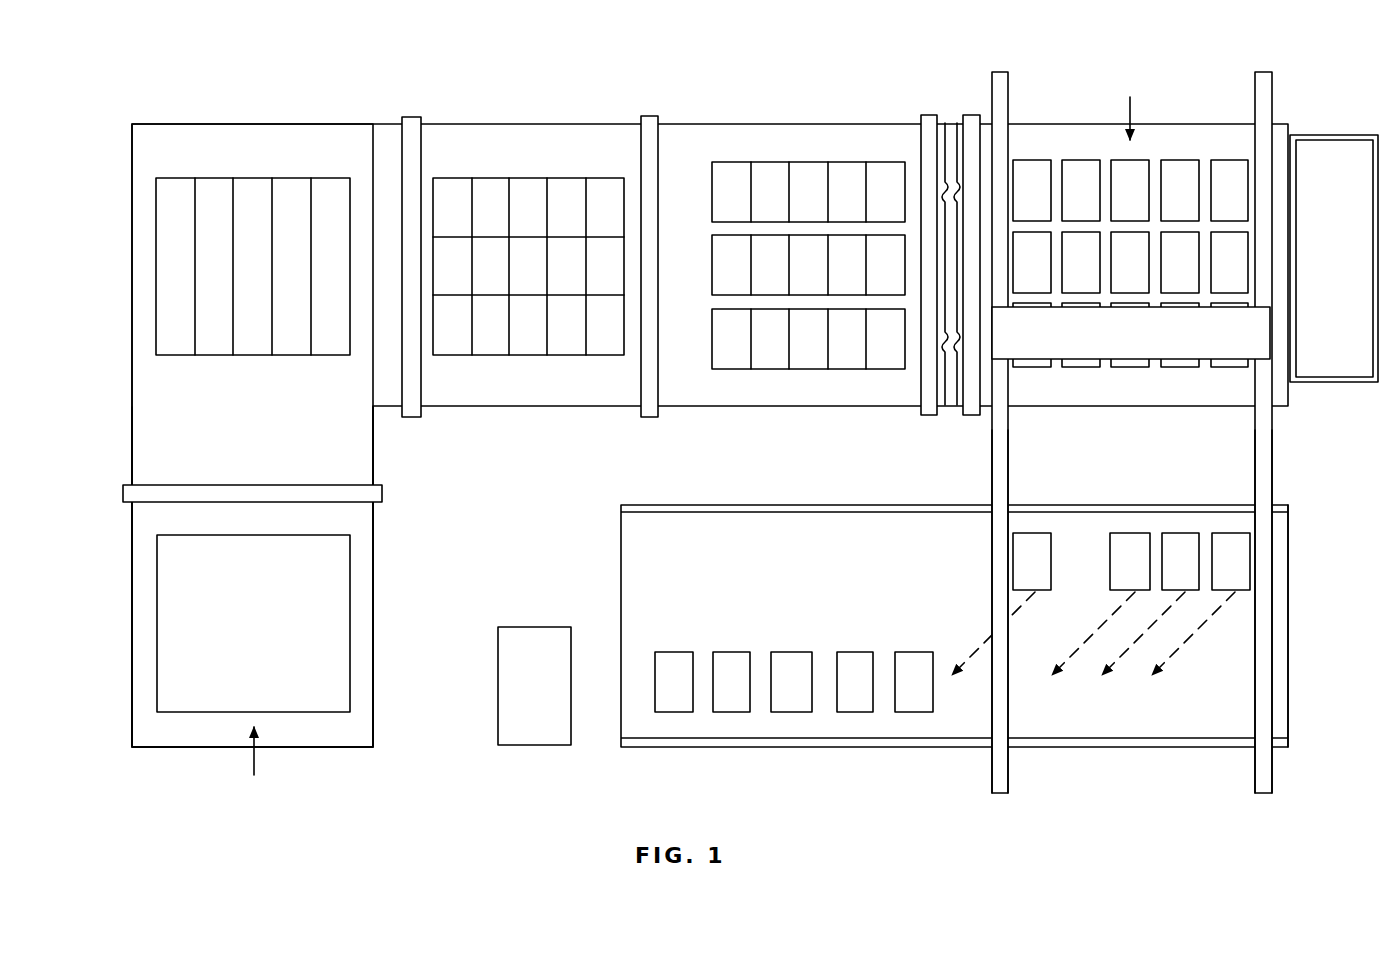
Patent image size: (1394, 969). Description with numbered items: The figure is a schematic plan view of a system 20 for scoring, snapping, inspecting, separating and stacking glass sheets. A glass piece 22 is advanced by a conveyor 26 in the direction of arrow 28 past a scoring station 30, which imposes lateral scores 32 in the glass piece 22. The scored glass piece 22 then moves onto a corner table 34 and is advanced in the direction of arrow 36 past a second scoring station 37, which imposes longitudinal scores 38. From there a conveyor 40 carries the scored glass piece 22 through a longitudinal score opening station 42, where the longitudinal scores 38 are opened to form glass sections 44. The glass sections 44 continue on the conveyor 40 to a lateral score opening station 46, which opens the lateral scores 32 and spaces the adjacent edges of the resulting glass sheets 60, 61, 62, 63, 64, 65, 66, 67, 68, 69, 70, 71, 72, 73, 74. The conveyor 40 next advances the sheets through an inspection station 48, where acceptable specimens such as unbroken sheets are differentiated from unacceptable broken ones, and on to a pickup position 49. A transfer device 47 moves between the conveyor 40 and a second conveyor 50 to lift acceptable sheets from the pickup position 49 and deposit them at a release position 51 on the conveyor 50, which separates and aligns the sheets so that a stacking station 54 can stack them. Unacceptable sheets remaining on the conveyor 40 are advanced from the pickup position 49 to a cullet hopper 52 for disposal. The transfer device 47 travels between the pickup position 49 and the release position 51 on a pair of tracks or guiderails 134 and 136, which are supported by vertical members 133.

The system 20 is at (605, 60).
The glass piece 22 is at (150, 688).
The conveyor 26 is at (125, 621).
The arrow 28 is at (254, 762).
The scoring station 30 is at (403, 494).
The lateral scores 32 is at (272, 195).
The corner table 34 is at (125, 138).
The arrow 36 is at (150, 267).
The second scoring station 37 is at (418, 106).
The longitudinal scores 38 is at (603, 295).
The conveyor 40 is at (1105, 110).
The longitudinal score opening station 42 is at (651, 108).
The glass sections 44 is at (855, 156).
The lateral score opening station 46 is at (927, 113).
The transfer device 47 is at (1146, 348).
The inspection station 48 is at (971, 111).
The pickup position 49 is at (1180, 106).
The conveyor 50 is at (1096, 759).
The release position 51 is at (1302, 551).
The cullet hopper 52 is at (1330, 136).
The stacking station 54 is at (535, 745).
The glass sheet 60 is at (1230, 368).
The glass sheet 61 is at (1180, 368).
The glass sheet 62 is at (1130, 368).
The glass sheet 63 is at (1081, 368).
The glass sheet 64 is at (1032, 368).
The glass sheet 65 is at (1242, 276).
The glass sheet 66 is at (1192, 276).
The glass sheet 67 is at (1142, 276).
The glass sheet 68 is at (1093, 276).
The glass sheet 69 is at (1044, 276).
The glass sheet 70 is at (1242, 204).
The glass sheet 71 is at (1192, 204).
The glass sheet 72 is at (1142, 204).
The glass sheet 73 is at (1093, 204).
The glass sheet 74 is at (1044, 204).
The vertical members 133 is at (1004, 86).
The guiderail 134 is at (993, 462).
The guiderail 136 is at (1272, 463).